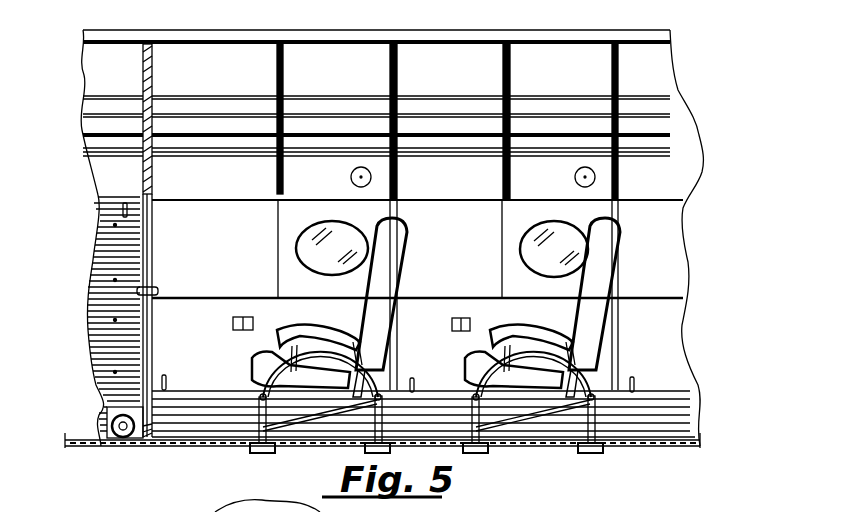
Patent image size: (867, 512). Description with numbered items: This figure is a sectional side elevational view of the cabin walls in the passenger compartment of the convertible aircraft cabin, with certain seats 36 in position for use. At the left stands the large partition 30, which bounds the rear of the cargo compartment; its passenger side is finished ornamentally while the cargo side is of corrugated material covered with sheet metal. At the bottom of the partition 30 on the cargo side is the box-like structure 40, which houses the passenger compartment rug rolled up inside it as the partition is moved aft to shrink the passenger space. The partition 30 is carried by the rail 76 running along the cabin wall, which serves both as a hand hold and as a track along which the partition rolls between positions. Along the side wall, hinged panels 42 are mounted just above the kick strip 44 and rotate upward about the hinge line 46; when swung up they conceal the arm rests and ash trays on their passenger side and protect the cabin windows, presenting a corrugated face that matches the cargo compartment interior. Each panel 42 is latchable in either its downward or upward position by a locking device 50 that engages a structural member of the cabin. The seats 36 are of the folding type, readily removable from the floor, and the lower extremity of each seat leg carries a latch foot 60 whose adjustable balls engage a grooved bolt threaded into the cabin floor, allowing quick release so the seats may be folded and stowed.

The rail 76 is at (518, 133).
The hinged panels 42 is at (108, 208).
The partition 30 is at (153, 253).
The hinge line 46 is at (190, 298).
The seats 36 is at (408, 256).
The kick strip 44 is at (192, 400).
The box-like structure 40 is at (97, 416).
The locking device 50 is at (635, 381).
The latch foot 60 is at (600, 448).